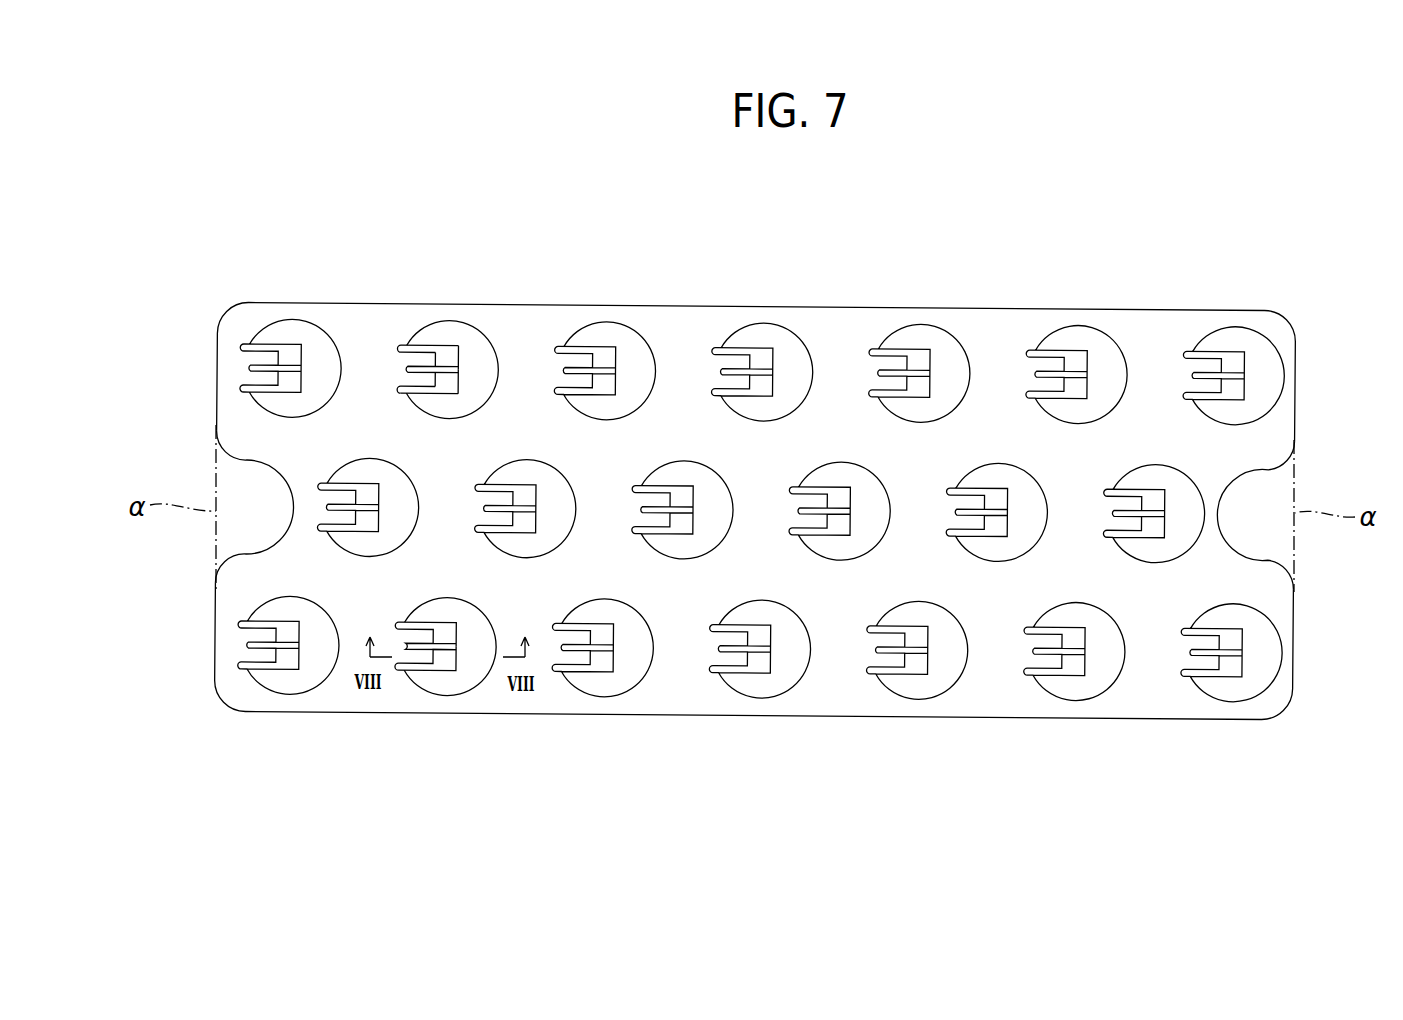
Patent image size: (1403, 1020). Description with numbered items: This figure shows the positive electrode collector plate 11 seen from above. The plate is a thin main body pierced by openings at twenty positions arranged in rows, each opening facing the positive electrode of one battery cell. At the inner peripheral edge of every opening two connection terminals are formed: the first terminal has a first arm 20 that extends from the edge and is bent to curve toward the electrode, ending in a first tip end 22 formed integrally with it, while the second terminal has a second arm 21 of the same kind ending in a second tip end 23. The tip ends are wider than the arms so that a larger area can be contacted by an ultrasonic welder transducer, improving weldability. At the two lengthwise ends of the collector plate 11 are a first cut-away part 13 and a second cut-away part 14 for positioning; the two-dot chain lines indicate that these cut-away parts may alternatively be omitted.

The positive electrode collector plate 11 is at (978, 255).
The first cut-away part 13 is at (1247, 480).
The second cut-away part 14 is at (253, 460).
The first arm 20 is at (420, 395).
The second arm 21 is at (419, 333).
The first tip end 22 is at (441, 395).
The second tip end 23 is at (421, 353).